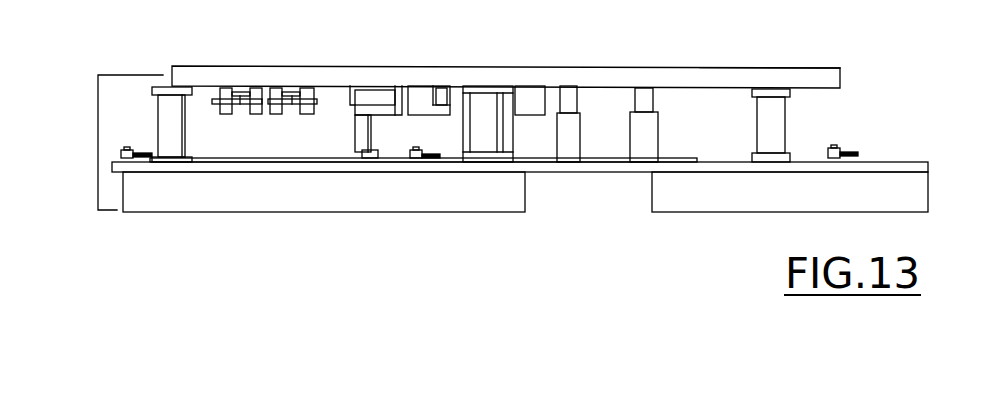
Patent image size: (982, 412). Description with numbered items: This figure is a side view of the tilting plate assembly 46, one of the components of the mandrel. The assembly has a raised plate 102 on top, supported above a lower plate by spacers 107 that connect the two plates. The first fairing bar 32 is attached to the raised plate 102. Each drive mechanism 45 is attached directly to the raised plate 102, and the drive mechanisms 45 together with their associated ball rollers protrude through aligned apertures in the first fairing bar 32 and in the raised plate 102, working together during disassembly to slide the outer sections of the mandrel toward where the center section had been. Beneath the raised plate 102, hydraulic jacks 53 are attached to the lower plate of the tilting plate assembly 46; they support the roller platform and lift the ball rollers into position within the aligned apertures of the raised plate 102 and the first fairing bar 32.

The first fairing bar 32 is at (773, 67).
The raised plate 102 is at (840, 76).
The spacers 107 is at (785, 123).
The hydraulic jack 53 is at (640, 150).
The drive mechanism 45 is at (264, 124).
The tilting plate assembly 46 is at (98, 140).